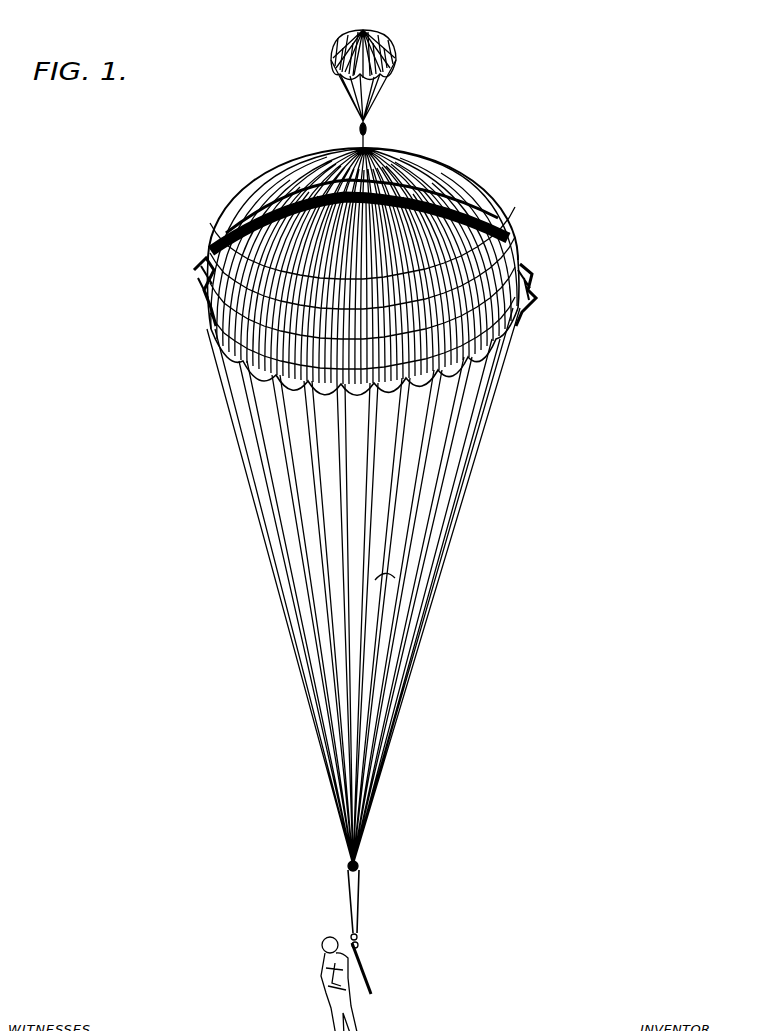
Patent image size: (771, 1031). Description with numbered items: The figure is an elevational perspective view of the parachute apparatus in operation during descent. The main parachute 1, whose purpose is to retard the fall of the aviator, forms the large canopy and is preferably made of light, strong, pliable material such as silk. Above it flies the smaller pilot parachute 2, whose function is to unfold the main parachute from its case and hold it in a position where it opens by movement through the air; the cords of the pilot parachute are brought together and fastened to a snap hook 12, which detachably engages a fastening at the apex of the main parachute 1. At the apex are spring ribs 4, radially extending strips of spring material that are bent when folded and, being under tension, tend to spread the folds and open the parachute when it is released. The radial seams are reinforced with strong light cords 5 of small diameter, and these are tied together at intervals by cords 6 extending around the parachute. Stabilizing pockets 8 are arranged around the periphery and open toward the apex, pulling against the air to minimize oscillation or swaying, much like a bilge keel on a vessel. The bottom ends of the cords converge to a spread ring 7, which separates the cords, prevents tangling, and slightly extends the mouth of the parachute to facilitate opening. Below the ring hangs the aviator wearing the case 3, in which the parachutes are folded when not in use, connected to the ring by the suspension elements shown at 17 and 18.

The main parachute 1 is at (480, 201).
The pilot parachute 2 is at (378, 33).
The case 3 is at (364, 979).
The spring ribs 4 is at (385, 575).
The cords 5 is at (452, 172).
The cords 6 is at (290, 156).
The spread ring 7 is at (352, 858).
The stabilizing pockets 8 is at (186, 262).
The snap hook 12 is at (359, 122).
The ring 17 is at (352, 935).
The suspension cords 18 is at (352, 889).